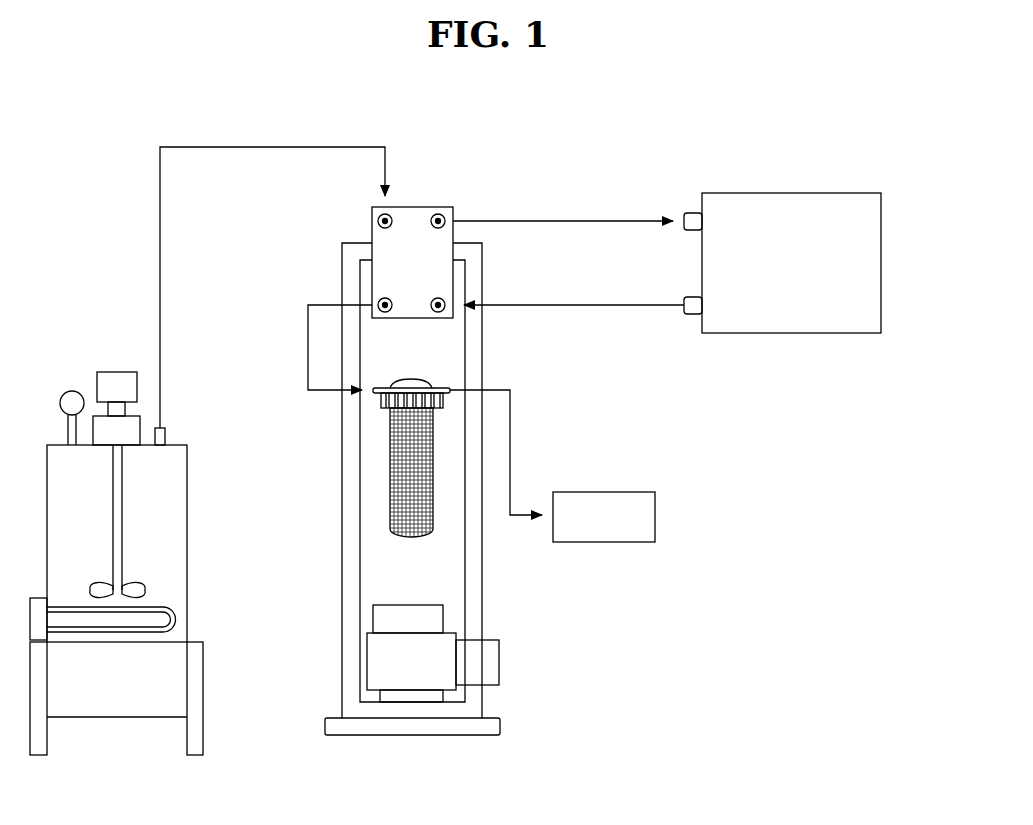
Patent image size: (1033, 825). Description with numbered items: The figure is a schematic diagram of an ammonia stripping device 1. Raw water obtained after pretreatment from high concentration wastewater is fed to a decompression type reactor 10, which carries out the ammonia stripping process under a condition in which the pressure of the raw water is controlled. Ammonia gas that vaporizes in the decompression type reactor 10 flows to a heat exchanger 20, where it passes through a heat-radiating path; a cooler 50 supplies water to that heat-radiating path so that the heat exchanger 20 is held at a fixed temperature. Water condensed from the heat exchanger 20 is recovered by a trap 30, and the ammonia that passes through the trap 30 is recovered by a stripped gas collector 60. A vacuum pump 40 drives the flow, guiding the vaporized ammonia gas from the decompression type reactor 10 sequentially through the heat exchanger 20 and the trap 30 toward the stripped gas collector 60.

The ammonia stripping device 1 is at (56, 109).
The decompression type reactor 10 is at (153, 528).
The heat exchanger 20 is at (413, 223).
The trap 30 is at (400, 477).
The vacuum pump 40 is at (493, 662).
The cooler 50 is at (843, 263).
The stripped gas collector 60 is at (628, 520).